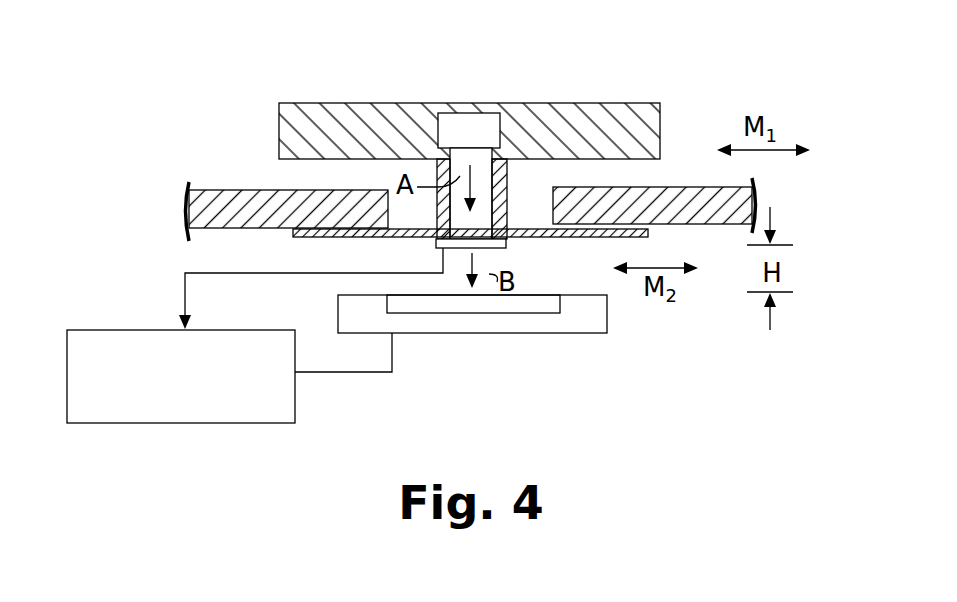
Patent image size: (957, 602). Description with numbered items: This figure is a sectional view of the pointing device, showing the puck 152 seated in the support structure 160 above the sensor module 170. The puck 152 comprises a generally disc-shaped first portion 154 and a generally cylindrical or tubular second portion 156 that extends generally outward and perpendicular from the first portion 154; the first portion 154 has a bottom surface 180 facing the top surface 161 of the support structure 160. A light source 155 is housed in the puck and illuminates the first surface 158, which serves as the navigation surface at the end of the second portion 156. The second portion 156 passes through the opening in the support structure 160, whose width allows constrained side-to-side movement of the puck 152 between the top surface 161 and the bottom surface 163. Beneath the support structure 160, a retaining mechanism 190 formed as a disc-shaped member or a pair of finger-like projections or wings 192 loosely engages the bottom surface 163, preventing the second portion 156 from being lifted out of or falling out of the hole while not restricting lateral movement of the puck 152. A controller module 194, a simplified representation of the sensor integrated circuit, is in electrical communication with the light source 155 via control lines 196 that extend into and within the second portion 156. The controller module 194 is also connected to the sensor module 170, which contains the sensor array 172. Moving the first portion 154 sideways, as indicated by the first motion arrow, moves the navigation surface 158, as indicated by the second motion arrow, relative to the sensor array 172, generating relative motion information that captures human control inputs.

The puck 152 is at (435, 146).
The first portion 154 is at (280, 135).
The light source 155 is at (458, 113).
The second portion 156 is at (505, 178).
The first surface 158 is at (488, 249).
The support structure 160 is at (175, 197).
The top surface 161 is at (620, 163).
The bottom surface 163 is at (228, 217).
The sensor module 170 is at (486, 347).
The sensor array 172 is at (493, 305).
The bottom surface 180 is at (683, 186).
The retaining mechanism 190 is at (340, 250).
The wings 192 is at (302, 238).
The controller module 194 is at (208, 423).
The control lines 196 is at (183, 292).